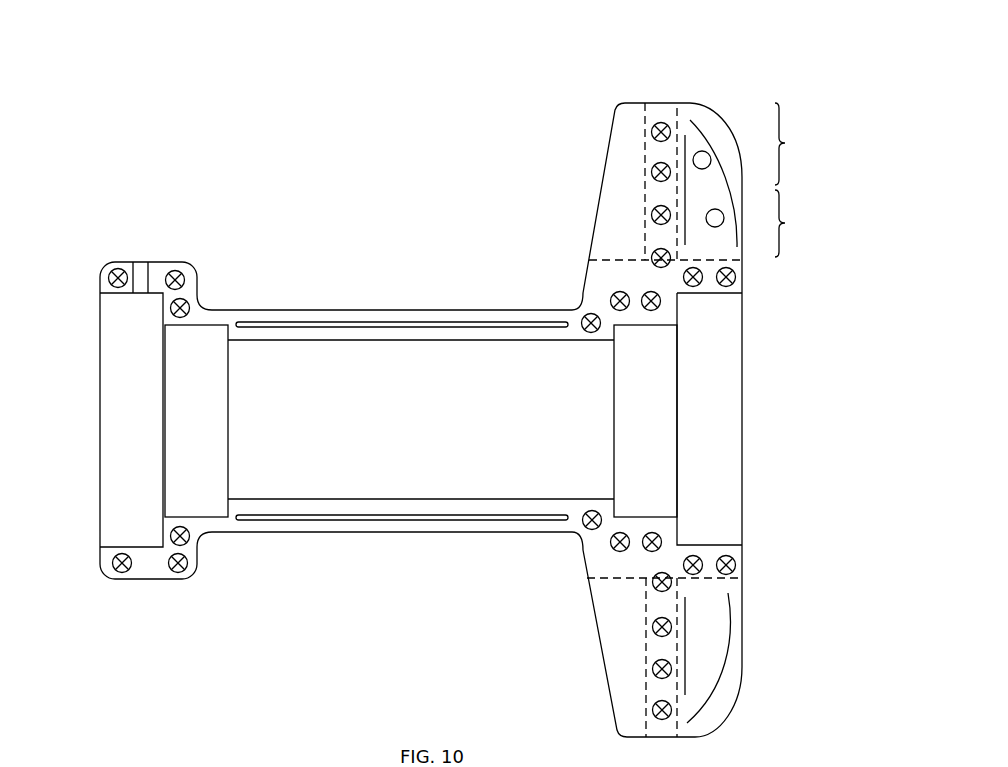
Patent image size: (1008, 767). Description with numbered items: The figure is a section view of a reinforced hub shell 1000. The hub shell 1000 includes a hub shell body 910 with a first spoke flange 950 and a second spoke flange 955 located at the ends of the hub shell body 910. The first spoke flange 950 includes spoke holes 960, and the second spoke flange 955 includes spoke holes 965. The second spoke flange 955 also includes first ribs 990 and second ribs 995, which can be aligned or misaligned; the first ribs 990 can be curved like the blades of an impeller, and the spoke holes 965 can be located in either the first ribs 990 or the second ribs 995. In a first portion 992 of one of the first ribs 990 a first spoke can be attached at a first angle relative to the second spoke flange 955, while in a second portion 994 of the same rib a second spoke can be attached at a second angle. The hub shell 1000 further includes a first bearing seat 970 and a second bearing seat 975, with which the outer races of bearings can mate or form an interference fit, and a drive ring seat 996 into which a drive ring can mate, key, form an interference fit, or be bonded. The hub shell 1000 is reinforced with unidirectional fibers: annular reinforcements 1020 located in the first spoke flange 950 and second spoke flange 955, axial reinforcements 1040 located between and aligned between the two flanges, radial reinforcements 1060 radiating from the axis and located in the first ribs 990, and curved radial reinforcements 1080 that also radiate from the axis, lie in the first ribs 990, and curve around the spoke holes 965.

The reinforced hub shell 1000 is at (158, 138).
The hub shell body 910 is at (420, 315).
The first spoke flange 950 is at (163, 268).
The second spoke flange 955 is at (662, 108).
The spoke holes 960 is at (141, 277).
The spoke holes 965 is at (709, 156).
The first bearing seat 970 is at (197, 445).
The second bearing seat 975 is at (647, 443).
The first ribs 990 is at (708, 123).
The first portion 992 is at (786, 223).
The second portion 994 is at (786, 143).
The second ribs 995 is at (612, 212).
The drive ring seat 996 is at (708, 437).
The annular reinforcements 1020 is at (114, 270).
The axial reinforcements 1040 is at (325, 323).
The radial reinforcements 1060 is at (684, 207).
The curved radial reinforcements 1080 is at (722, 178).